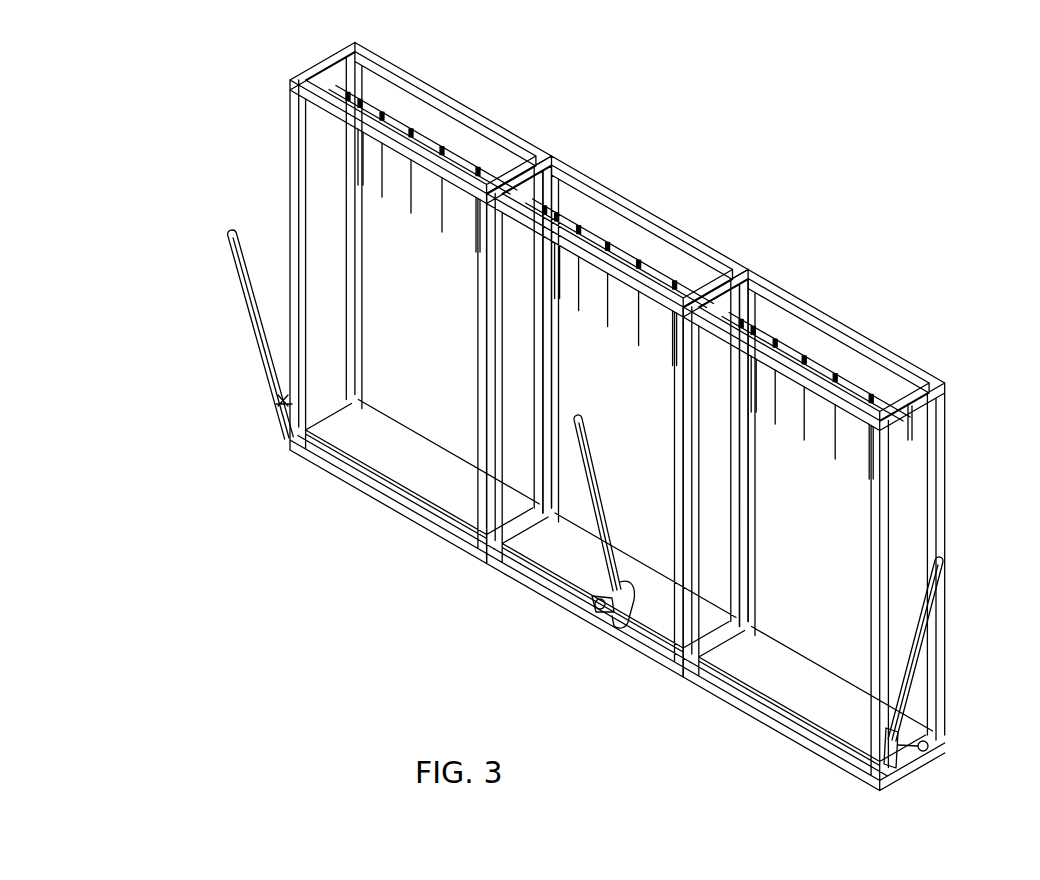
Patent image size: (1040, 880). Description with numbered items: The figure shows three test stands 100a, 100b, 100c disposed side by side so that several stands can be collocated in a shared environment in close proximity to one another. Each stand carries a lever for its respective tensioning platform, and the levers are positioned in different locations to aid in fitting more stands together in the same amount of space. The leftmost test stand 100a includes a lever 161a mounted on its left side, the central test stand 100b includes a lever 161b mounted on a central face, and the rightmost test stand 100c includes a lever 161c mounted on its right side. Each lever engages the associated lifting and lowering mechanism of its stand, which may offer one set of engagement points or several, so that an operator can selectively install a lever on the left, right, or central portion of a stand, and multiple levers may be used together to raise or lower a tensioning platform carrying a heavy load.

The leftmost test stand 100a is at (490, 126).
The central test stand 100b is at (676, 226).
The rightmost test stand 100c is at (880, 347).
The lever 161a is at (245, 297).
The lever 161b is at (590, 433).
The lever 161c is at (913, 665).